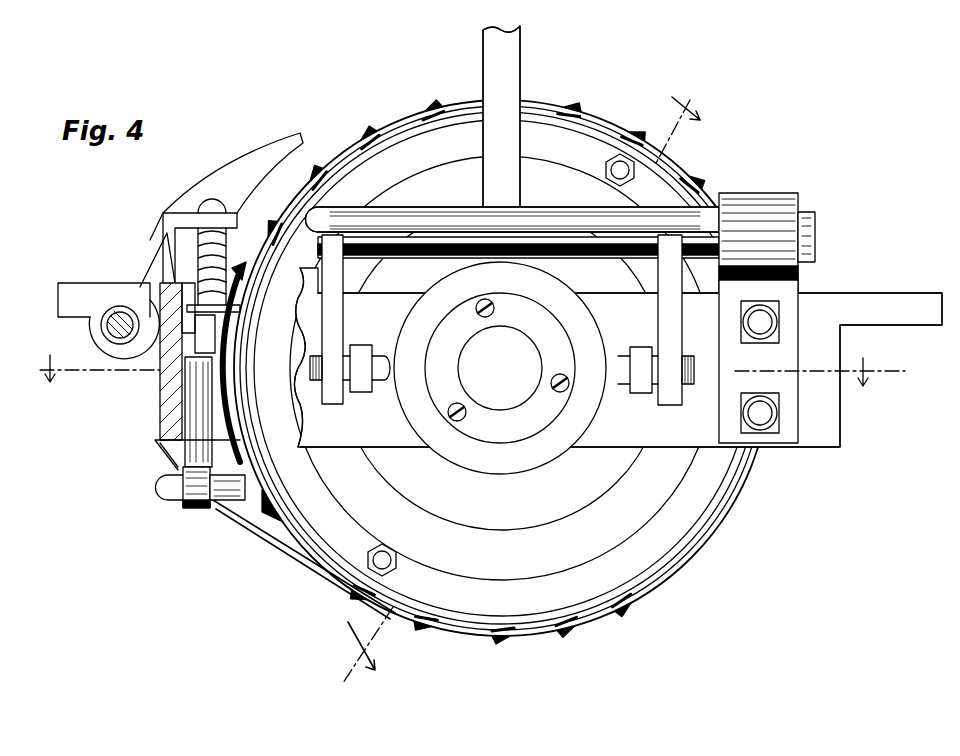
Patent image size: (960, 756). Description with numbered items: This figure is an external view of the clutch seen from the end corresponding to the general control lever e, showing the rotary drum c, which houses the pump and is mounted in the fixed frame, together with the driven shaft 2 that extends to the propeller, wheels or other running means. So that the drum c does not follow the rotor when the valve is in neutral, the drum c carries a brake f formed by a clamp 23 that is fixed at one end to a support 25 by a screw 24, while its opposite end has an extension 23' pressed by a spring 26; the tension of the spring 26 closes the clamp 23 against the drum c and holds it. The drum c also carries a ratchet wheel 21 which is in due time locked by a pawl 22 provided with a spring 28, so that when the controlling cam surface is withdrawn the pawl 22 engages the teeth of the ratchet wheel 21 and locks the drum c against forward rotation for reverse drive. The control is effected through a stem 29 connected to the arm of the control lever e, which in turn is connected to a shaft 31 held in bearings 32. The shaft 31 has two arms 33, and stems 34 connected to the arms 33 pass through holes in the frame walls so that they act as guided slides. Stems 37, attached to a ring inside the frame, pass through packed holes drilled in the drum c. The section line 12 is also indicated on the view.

The driven shaft 2 is at (515, 396).
The section line 12 is at (514, 379).
The ratchet wheel 21 is at (382, 118).
The pawl 22 is at (242, 162).
The clamp 23 is at (491, 356).
The extension of clamp 23' is at (136, 260).
The screw 24 is at (158, 446).
The support 25 is at (176, 452).
The spring 26 is at (198, 242).
The spring 28 is at (116, 298).
The stem 29 is at (160, 379).
The shaft 31 is at (361, 214).
The bearings 32 is at (800, 208).
The arms 33 is at (328, 305).
The stems 34 is at (362, 395).
The stems 37 is at (632, 172).
The rotary drum c is at (463, 110).
The general control lever e is at (512, 72).
The brake f is at (206, 220).